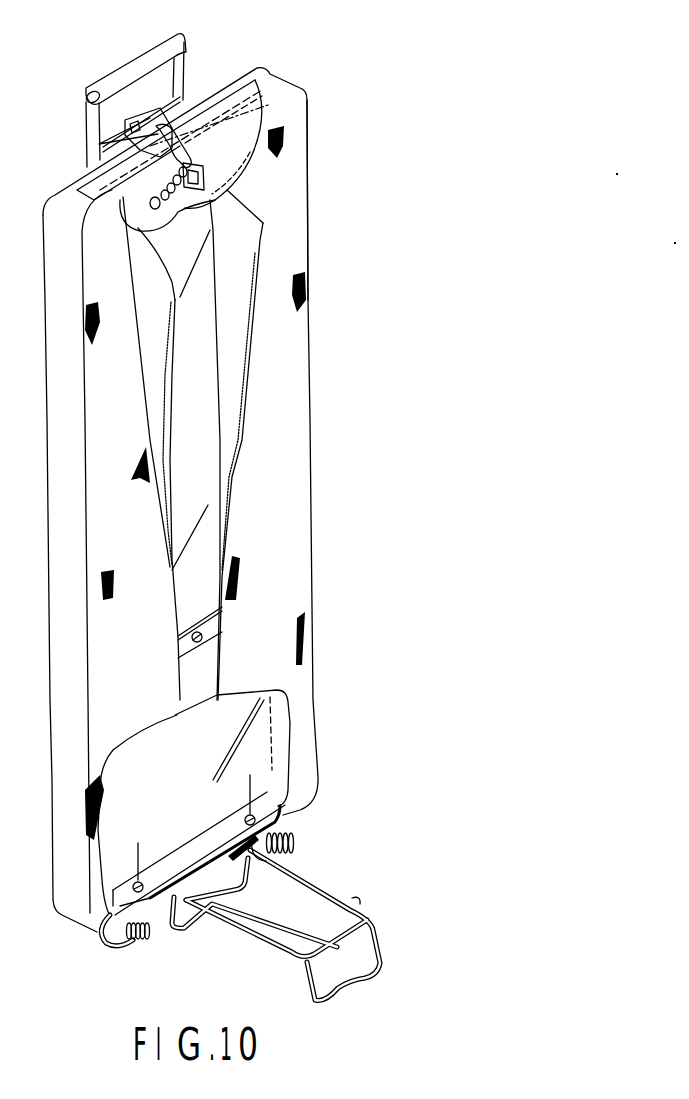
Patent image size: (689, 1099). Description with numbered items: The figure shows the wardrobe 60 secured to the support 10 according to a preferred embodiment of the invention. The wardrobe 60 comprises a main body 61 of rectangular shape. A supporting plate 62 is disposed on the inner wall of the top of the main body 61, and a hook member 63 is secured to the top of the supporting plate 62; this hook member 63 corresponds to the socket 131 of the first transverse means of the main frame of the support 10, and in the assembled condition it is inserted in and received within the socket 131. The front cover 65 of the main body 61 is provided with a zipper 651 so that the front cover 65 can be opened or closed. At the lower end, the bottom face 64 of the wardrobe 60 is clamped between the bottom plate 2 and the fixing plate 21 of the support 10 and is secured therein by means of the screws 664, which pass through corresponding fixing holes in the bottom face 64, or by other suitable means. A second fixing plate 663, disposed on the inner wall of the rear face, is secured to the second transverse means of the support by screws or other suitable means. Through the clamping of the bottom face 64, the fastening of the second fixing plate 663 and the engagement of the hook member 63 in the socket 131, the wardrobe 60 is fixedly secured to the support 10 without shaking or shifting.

The support 10 is at (196, 44).
The supporting plate 62 is at (220, 112).
The hook member 63 is at (137, 125).
The socket 131 is at (99, 144).
The main body 61 is at (310, 158).
The wardrobe 60 is at (323, 314).
The zipper 651 is at (238, 470).
The front cover 65 is at (297, 545).
The second fixing plate 663 is at (203, 630).
The bottom face 64 is at (277, 797).
The screws 664 is at (260, 825).
The fixing plate 21 is at (280, 828).
The bottom plate 2 is at (141, 940).